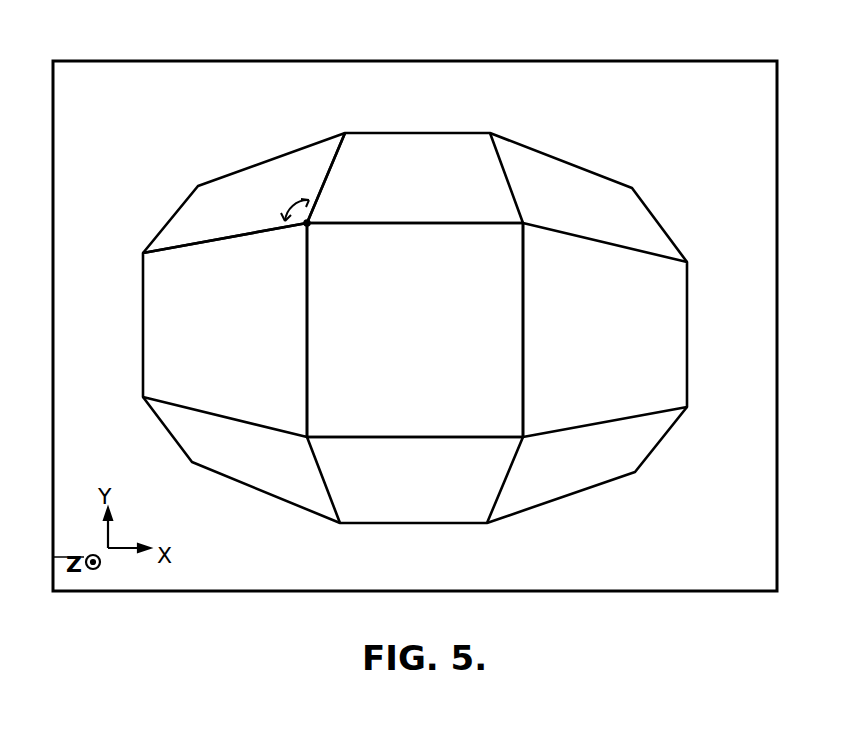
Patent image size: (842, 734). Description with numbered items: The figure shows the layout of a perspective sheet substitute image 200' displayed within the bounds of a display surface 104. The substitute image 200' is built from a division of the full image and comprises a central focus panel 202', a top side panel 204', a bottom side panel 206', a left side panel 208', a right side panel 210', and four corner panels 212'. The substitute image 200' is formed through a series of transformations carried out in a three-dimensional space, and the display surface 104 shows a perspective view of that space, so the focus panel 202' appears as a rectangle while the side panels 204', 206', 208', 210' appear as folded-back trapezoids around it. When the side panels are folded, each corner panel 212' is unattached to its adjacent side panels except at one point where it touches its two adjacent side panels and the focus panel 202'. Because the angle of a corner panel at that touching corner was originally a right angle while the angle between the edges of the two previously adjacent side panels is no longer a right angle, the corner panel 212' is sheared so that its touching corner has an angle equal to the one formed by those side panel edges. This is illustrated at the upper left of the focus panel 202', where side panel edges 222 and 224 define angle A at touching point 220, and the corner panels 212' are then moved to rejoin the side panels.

The display surface 104 is at (682, 62).
The perspective sheet substitute image 200' is at (418, 331).
The focus panel 202' is at (457, 330).
The top side panel 204' is at (415, 161).
The bottom side panel 206' is at (415, 500).
The left side panel 208' is at (187, 330).
The right side panel 210' is at (645, 330).
The corner panels 212' is at (430, 328).
The touching point 220 is at (307, 223).
The side panel edge 222 is at (222, 240).
The side panel edge 224 is at (332, 170).
The angle A is at (288, 203).